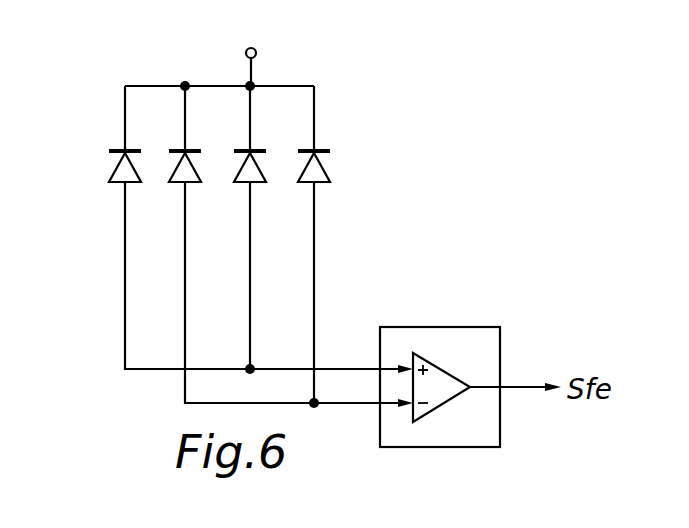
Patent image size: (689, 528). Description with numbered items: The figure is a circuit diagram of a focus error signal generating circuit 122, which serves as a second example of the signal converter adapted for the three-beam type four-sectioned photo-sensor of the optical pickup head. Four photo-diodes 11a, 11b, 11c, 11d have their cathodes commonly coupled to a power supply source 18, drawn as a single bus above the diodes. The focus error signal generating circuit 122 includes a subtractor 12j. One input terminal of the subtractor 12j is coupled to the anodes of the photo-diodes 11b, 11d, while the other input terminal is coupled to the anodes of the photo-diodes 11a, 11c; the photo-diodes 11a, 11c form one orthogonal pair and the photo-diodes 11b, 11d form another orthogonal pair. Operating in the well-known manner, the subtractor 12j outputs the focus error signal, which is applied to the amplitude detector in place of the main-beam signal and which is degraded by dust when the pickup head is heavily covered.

The power supply source 18 is at (256, 54).
The photo-diode 11a is at (327, 172).
The photo-diode 11b is at (258, 177).
The photo-diode 11c is at (177, 182).
The photo-diode 11d is at (112, 173).
The focus error signal generating circuit 122 is at (438, 327).
The subtractor 12j is at (466, 378).